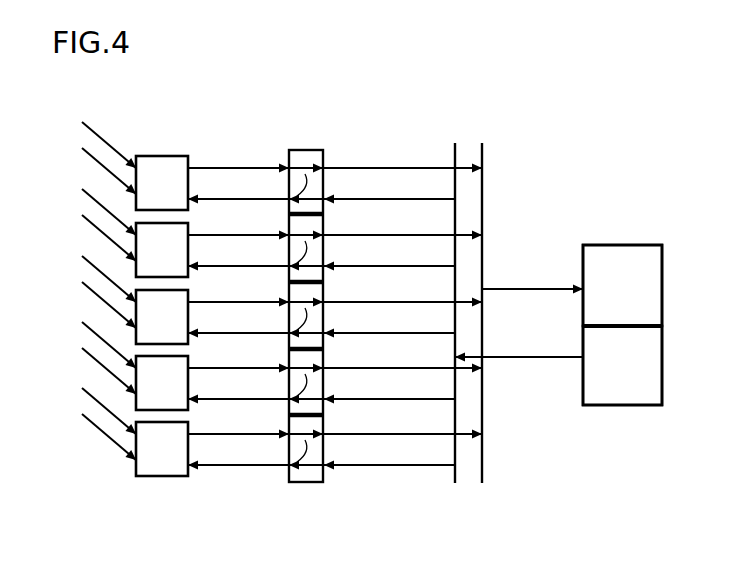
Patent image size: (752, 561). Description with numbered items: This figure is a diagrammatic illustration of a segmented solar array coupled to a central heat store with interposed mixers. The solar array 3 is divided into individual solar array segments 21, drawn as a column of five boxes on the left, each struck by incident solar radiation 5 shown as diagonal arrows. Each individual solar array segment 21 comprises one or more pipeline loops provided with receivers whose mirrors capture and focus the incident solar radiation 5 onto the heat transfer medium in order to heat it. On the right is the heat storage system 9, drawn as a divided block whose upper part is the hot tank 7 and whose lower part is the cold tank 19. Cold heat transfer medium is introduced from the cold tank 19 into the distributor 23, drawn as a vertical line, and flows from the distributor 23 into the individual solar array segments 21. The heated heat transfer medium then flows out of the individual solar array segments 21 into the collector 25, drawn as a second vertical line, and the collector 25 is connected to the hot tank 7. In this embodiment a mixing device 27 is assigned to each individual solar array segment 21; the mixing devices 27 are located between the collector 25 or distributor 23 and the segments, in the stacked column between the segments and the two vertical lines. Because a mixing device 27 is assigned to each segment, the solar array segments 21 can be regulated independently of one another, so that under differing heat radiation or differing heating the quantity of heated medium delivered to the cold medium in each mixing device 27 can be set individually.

The solar array 3 is at (166, 147).
The incident solar radiation 5 is at (103, 137).
The hot tank 7 is at (581, 290).
The heat storage system 9 is at (620, 236).
The cold tank 19 is at (650, 384).
The individual solar array segments 21 is at (197, 220).
The distributor 23 is at (483, 188).
The collector 25 is at (447, 152).
The mixing device 27 is at (305, 160).